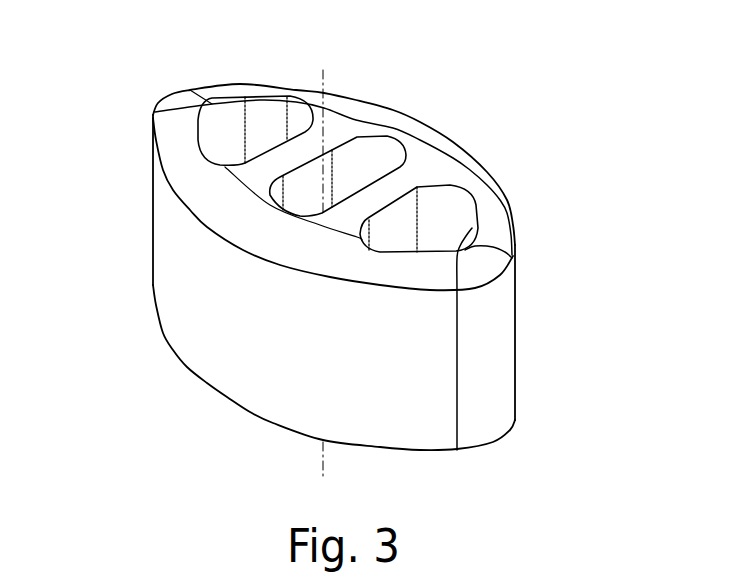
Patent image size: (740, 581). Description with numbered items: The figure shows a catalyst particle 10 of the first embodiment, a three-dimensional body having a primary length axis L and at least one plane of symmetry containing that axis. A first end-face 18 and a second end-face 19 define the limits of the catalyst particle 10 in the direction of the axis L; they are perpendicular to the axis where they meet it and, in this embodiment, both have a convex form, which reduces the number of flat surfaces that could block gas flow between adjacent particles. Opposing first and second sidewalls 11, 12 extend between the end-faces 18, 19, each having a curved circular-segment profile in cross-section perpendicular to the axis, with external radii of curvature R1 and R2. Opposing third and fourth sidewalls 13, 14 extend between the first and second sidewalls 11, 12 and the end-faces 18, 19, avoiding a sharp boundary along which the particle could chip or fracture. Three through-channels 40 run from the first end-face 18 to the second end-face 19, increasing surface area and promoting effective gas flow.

The catalyst particle 10 is at (527, 130).
The first sidewall 11 is at (170, 278).
The second sidewall 12 is at (517, 237).
The third sidewall 13 is at (498, 343).
The fourth sidewall 14 is at (167, 183).
The first end-face 18 is at (483, 190).
The second end-face 19 is at (440, 452).
The through-channels 40 is at (268, 127).